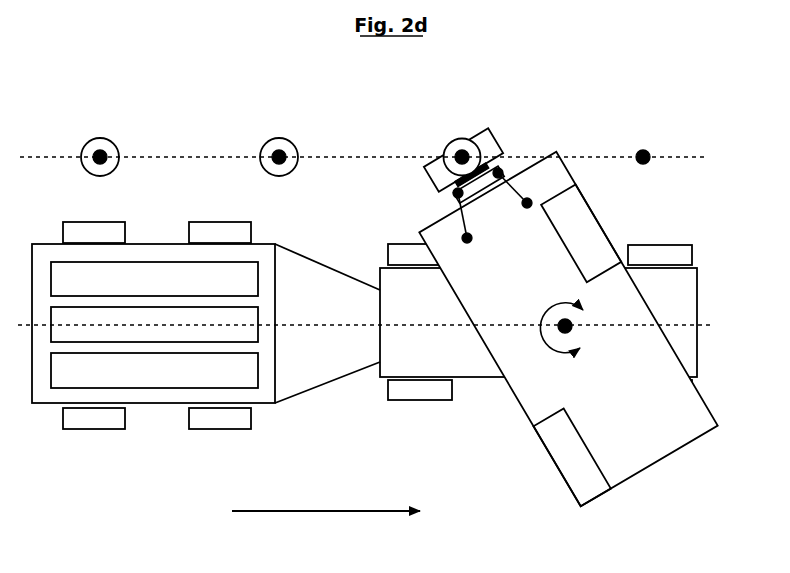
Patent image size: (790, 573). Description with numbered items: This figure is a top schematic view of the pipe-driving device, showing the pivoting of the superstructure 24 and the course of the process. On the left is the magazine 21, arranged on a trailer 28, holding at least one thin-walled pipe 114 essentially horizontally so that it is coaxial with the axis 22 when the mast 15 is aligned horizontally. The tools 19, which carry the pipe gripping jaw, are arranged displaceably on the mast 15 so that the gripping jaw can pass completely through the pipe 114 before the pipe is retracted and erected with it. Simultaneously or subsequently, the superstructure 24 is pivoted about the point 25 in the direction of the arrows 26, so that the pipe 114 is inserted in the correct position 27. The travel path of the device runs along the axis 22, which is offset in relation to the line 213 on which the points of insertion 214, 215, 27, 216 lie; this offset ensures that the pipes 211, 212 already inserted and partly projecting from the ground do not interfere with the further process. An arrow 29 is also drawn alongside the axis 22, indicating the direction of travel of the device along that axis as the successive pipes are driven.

The magazine 21 is at (206, 382).
The axis 22 is at (707, 324).
The superstructure 24 is at (657, 440).
The point 25 is at (573, 325).
The arrows 26 is at (551, 325).
The correct position 27 is at (488, 134).
The tools 19 is at (477, 176).
The mast 15 is at (478, 182).
The pipe 114 is at (455, 140).
The trailer 28 is at (163, 403).
The travel direction 29 is at (326, 502).
The pipe 211 is at (89, 141).
The pipe 212 is at (283, 139).
The line 213 is at (697, 157).
The point of insertion 214 is at (107, 160).
The point of insertion 215 is at (285, 163).
The point of insertion 216 is at (649, 161).